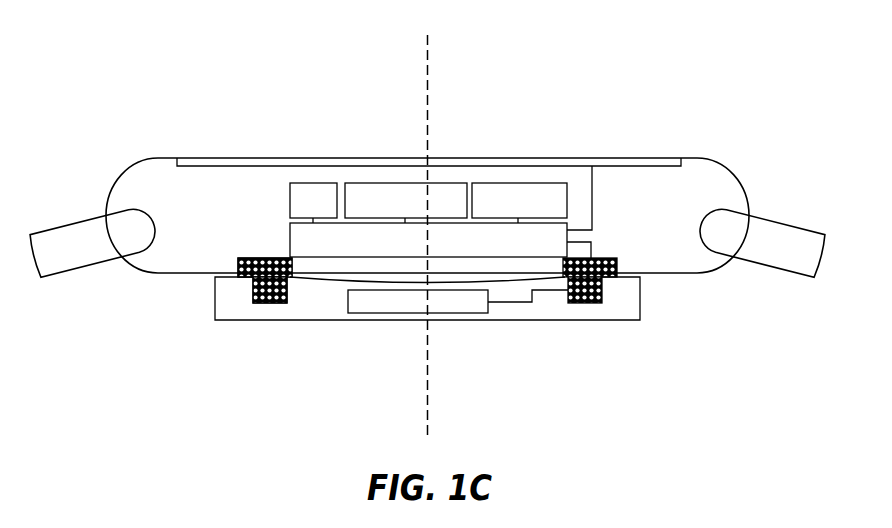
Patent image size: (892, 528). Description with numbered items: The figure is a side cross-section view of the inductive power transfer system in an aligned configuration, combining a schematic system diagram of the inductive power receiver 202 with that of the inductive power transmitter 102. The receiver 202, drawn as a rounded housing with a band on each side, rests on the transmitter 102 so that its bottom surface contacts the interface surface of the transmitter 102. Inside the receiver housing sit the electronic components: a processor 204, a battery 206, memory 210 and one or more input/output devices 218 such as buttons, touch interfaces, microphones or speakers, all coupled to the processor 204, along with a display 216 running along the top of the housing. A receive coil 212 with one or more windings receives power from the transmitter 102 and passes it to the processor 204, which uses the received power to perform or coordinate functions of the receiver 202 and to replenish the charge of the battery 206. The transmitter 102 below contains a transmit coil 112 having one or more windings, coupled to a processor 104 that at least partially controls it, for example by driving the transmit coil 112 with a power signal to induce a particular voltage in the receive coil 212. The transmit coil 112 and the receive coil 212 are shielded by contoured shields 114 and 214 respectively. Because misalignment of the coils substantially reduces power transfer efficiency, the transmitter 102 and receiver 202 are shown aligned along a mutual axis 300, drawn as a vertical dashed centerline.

The mutual axis 300 is at (429, 35).
The inductive power receiver 202 is at (120, 173).
The display 216 is at (635, 158).
The input/output devices 218 is at (313, 183).
The battery 206 is at (402, 183).
The memory 210 is at (545, 183).
The processor 204 is at (288, 242).
The receive coil 212 is at (277, 258).
The contoured shield 214 is at (238, 258).
The transmit coil 112 is at (290, 303).
The contoured shield 114 is at (258, 303).
The inductive power transmitter 102 is at (640, 320).
The processor 104 is at (467, 313).